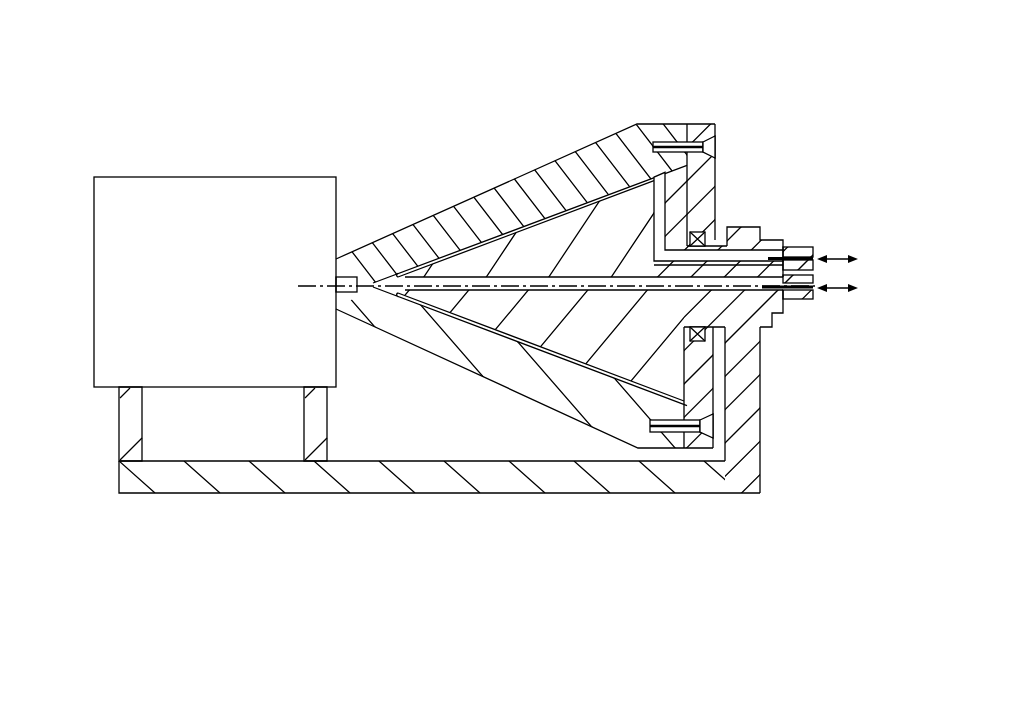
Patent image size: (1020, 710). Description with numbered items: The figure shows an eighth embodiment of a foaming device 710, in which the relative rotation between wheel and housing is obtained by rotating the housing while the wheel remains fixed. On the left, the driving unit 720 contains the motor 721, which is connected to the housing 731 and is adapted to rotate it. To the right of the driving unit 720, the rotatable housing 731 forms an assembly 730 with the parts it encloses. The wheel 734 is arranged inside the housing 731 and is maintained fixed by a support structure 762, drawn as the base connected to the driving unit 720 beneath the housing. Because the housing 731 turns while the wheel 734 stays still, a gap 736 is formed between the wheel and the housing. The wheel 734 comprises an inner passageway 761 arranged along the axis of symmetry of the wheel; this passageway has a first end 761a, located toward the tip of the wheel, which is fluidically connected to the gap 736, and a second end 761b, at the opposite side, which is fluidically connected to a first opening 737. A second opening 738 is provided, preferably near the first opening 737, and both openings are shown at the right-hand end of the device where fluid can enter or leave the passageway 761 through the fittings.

The foaming device 710 is at (124, 100).
The driving unit 720 is at (76, 250).
The motor 721 is at (165, 205).
The probe assembly 730 is at (786, 122).
The housing 731 is at (618, 140).
The wheel 734 is at (615, 355).
The gap 736 is at (546, 163).
The first opening 737 is at (790, 300).
The second opening 738 is at (803, 253).
The inner passageway 761 is at (468, 275).
The first end of the inner passageway 761a is at (407, 277).
The second end of the inner passageway 761b is at (762, 290).
The support structure 762 is at (472, 506).